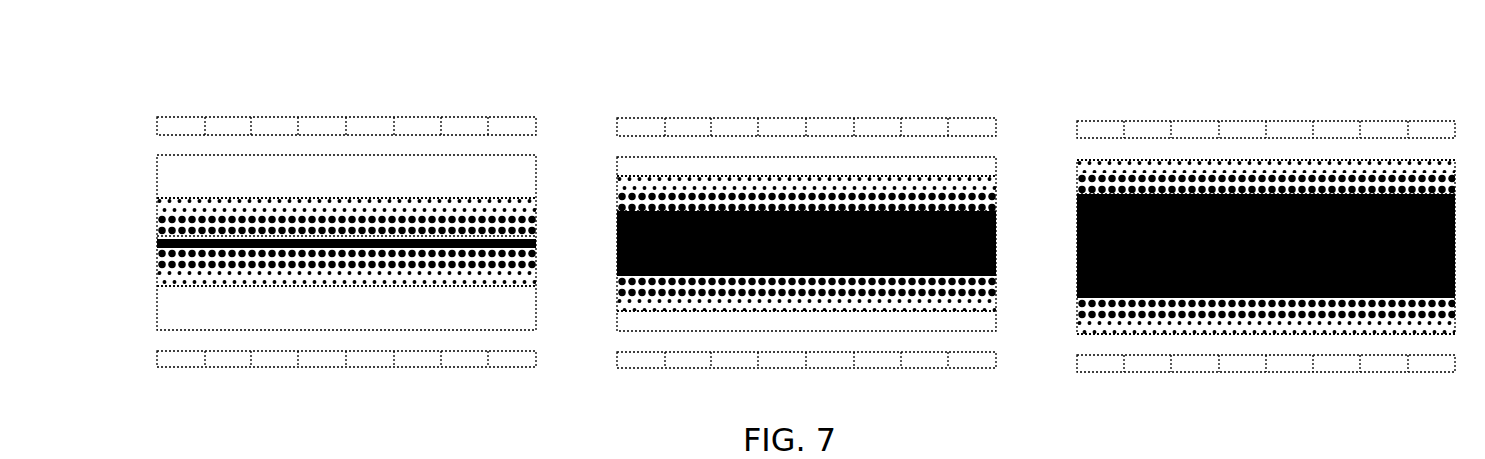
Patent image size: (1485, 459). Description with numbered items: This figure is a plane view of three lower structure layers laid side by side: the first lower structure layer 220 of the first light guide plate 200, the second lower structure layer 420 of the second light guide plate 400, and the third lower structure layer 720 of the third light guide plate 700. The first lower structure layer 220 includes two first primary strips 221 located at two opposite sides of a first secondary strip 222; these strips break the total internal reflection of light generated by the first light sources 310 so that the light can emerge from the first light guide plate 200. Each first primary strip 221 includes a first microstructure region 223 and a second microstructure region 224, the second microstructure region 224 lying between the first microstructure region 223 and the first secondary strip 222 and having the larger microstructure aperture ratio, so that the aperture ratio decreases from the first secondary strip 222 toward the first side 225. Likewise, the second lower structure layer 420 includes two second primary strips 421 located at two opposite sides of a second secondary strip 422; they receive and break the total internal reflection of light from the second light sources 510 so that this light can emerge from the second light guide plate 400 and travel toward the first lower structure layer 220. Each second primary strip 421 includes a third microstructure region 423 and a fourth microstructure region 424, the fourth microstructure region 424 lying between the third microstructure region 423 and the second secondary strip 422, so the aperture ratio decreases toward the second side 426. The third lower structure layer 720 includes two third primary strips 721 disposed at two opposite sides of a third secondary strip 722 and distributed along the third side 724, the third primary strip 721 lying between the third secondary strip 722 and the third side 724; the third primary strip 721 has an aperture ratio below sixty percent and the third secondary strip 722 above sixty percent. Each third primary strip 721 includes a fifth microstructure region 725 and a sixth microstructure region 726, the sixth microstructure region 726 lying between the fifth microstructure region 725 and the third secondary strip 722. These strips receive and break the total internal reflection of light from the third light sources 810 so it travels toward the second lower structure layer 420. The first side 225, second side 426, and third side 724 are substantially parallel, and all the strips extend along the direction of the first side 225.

The first light guide plate 200 is at (146, 148).
The first lower structure layer 220 is at (320, 44).
The first primary strip 221 is at (288, 84).
The first secondary strip 222 is at (331, 231).
The first microstructure region 223 is at (242, 194).
The second microstructure region 224 is at (298, 212).
The first side 225 is at (167, 146).
The first light sources 310 is at (176, 117).
The second light guide plate 400 is at (606, 150).
The second lower structure layer 420 is at (782, 51).
The second primary strip 421 is at (748, 86).
The second secondary strip 422 is at (780, 203).
The third microstructure region 423 is at (692, 174).
The fourth microstructure region 424 is at (744, 187).
The second side 426 is at (627, 148).
The second light sources 510 is at (634, 119).
The third light guide plate 700 is at (1066, 153).
The third lower structure layer 720 is at (1240, 54).
The third primary strip 721 is at (1207, 89).
The third secondary strip 722 is at (1238, 186).
The third side 724 is at (1085, 152).
The fifth microstructure region 725 is at (1151, 166).
The sixth microstructure region 726 is at (1205, 174).
The third light sources 810 is at (1095, 122).